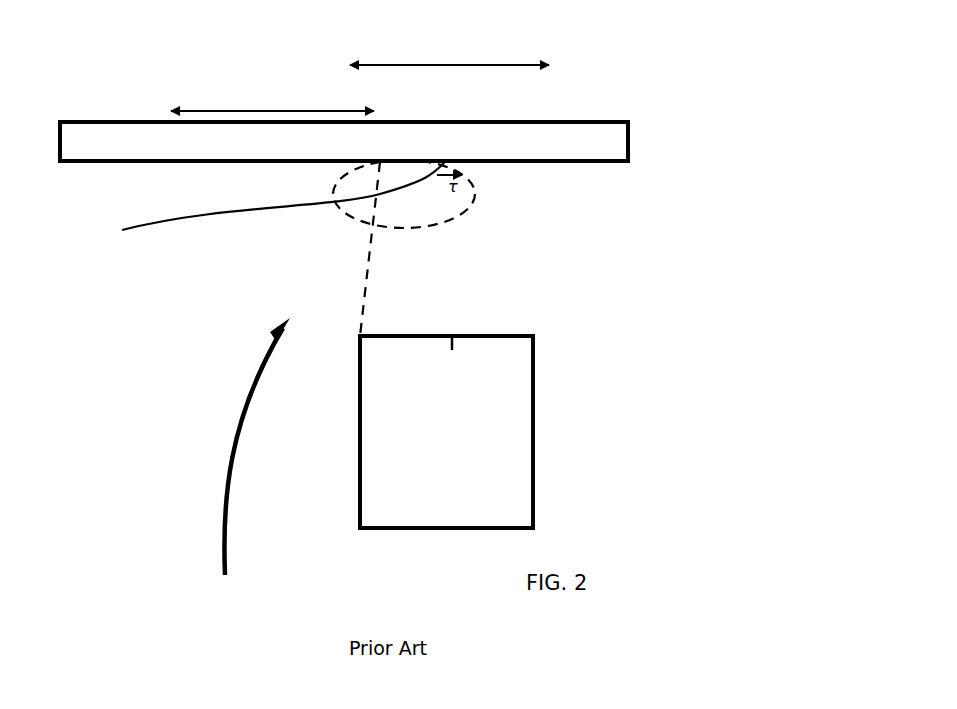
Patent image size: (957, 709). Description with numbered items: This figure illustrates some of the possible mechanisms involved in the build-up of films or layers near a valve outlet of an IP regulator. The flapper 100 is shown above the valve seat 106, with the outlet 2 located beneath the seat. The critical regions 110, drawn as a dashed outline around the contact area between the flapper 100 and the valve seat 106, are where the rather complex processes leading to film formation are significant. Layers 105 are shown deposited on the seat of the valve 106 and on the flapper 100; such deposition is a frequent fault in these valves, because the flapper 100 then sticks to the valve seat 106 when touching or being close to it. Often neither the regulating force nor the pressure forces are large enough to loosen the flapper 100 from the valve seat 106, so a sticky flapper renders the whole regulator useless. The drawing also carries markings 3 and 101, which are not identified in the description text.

The flapper 100 is at (344, 141).
The layers 105 is at (250, 162).
The critical regions 110 is at (457, 220).
The outlet 2 is at (398, 249).
The direction arrow 3 is at (248, 446).
The head 101 is at (446, 432).
The valve seat 106 is at (451, 358).